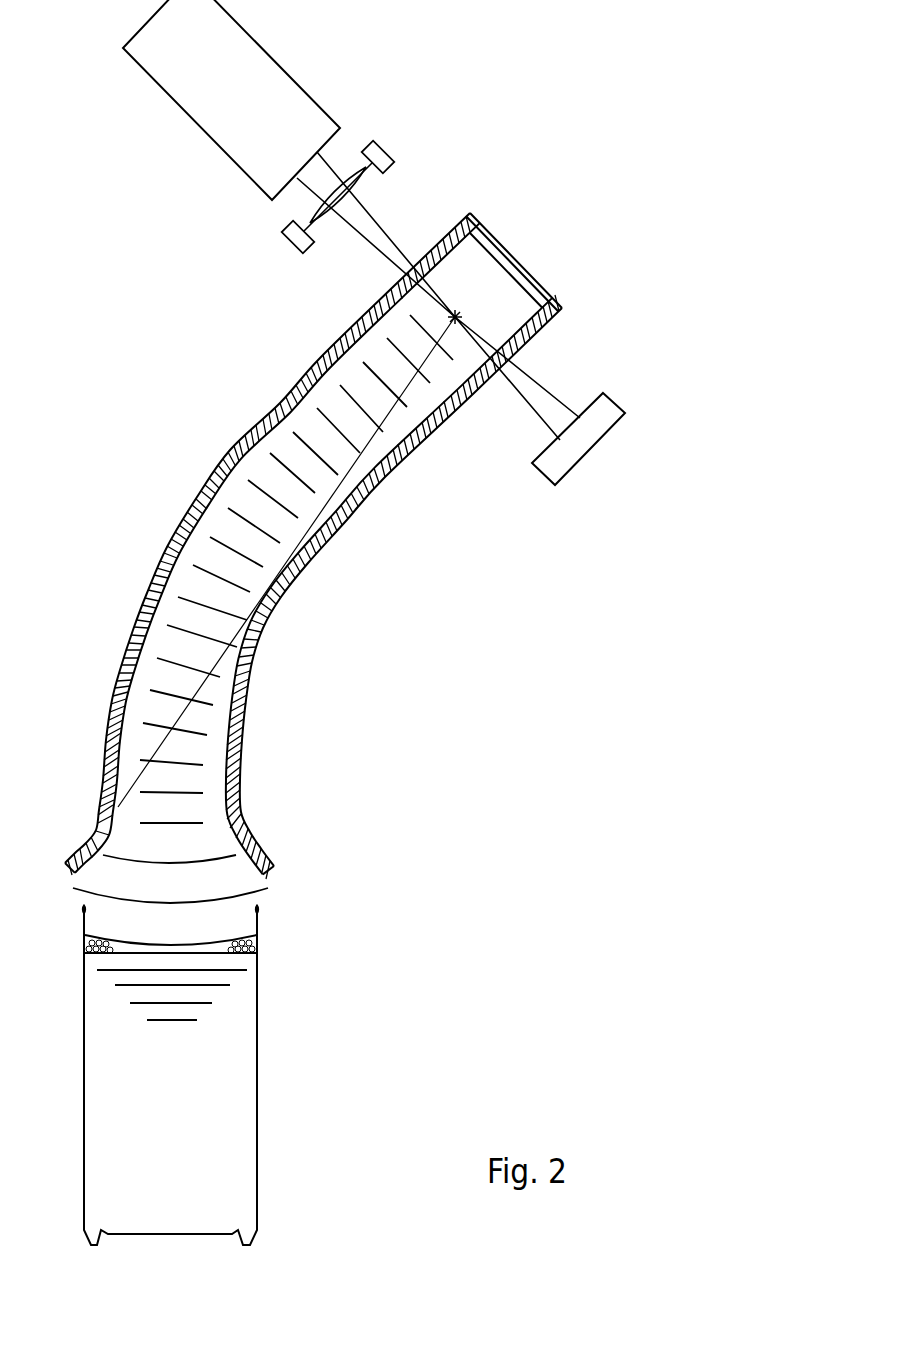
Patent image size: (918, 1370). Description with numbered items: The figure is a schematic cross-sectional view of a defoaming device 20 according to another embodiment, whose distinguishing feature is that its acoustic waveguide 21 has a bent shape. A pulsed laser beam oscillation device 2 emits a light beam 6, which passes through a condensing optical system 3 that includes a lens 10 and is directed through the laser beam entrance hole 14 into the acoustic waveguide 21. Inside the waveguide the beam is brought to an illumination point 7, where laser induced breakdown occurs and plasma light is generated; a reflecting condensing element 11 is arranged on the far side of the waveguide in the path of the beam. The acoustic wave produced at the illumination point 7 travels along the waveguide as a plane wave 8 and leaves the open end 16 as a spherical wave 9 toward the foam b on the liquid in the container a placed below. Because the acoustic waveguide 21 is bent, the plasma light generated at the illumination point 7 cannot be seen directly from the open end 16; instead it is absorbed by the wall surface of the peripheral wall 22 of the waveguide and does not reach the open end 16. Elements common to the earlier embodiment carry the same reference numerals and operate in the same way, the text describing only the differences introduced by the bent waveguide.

The pulsed laser beam oscillation device 2 is at (275, 60).
The condensing optical system 3 is at (389, 146).
The light beam 6 is at (355, 233).
The illumination point 7 is at (462, 312).
The plane wave 8 is at (263, 492).
The spherical wave 9 is at (150, 943).
The lens 10 is at (358, 188).
The reflecting condensing element 11 is at (588, 457).
The laser beam entrance hole 14 is at (417, 272).
The open end 16 is at (272, 865).
The defoaming device 20 is at (522, 154).
The acoustic waveguide 21 is at (390, 480).
The peripheral wall 22 is at (145, 595).
The container a is at (83, 1082).
The foam b is at (258, 940).